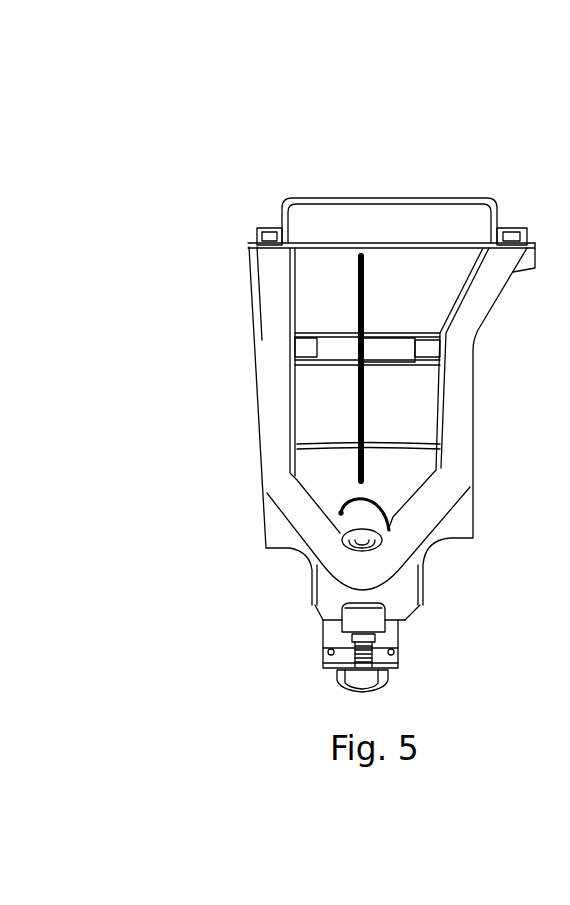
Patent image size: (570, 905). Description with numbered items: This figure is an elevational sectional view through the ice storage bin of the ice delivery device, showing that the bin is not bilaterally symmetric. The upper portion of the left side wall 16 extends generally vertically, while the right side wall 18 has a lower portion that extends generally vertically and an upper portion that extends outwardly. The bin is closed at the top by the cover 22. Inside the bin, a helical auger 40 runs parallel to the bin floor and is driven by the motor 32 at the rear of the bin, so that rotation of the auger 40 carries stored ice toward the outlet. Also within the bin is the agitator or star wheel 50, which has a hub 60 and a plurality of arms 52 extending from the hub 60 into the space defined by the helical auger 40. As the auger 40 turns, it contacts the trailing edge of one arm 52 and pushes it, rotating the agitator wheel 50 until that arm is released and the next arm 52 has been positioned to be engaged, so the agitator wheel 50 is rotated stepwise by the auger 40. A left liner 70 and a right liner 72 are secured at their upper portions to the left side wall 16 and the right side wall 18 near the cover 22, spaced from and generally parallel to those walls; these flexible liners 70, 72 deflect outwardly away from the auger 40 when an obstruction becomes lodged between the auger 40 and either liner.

The left side wall 16 is at (272, 315).
The right side wall 18 is at (477, 303).
The cover 22 is at (348, 217).
The motor 32 is at (387, 640).
The helical auger 40 is at (383, 515).
The agitator wheel 50 is at (362, 370).
The arms 52 is at (365, 398).
The hub 60 is at (330, 332).
The left liner 70 is at (292, 428).
The right liner 72 is at (438, 438).